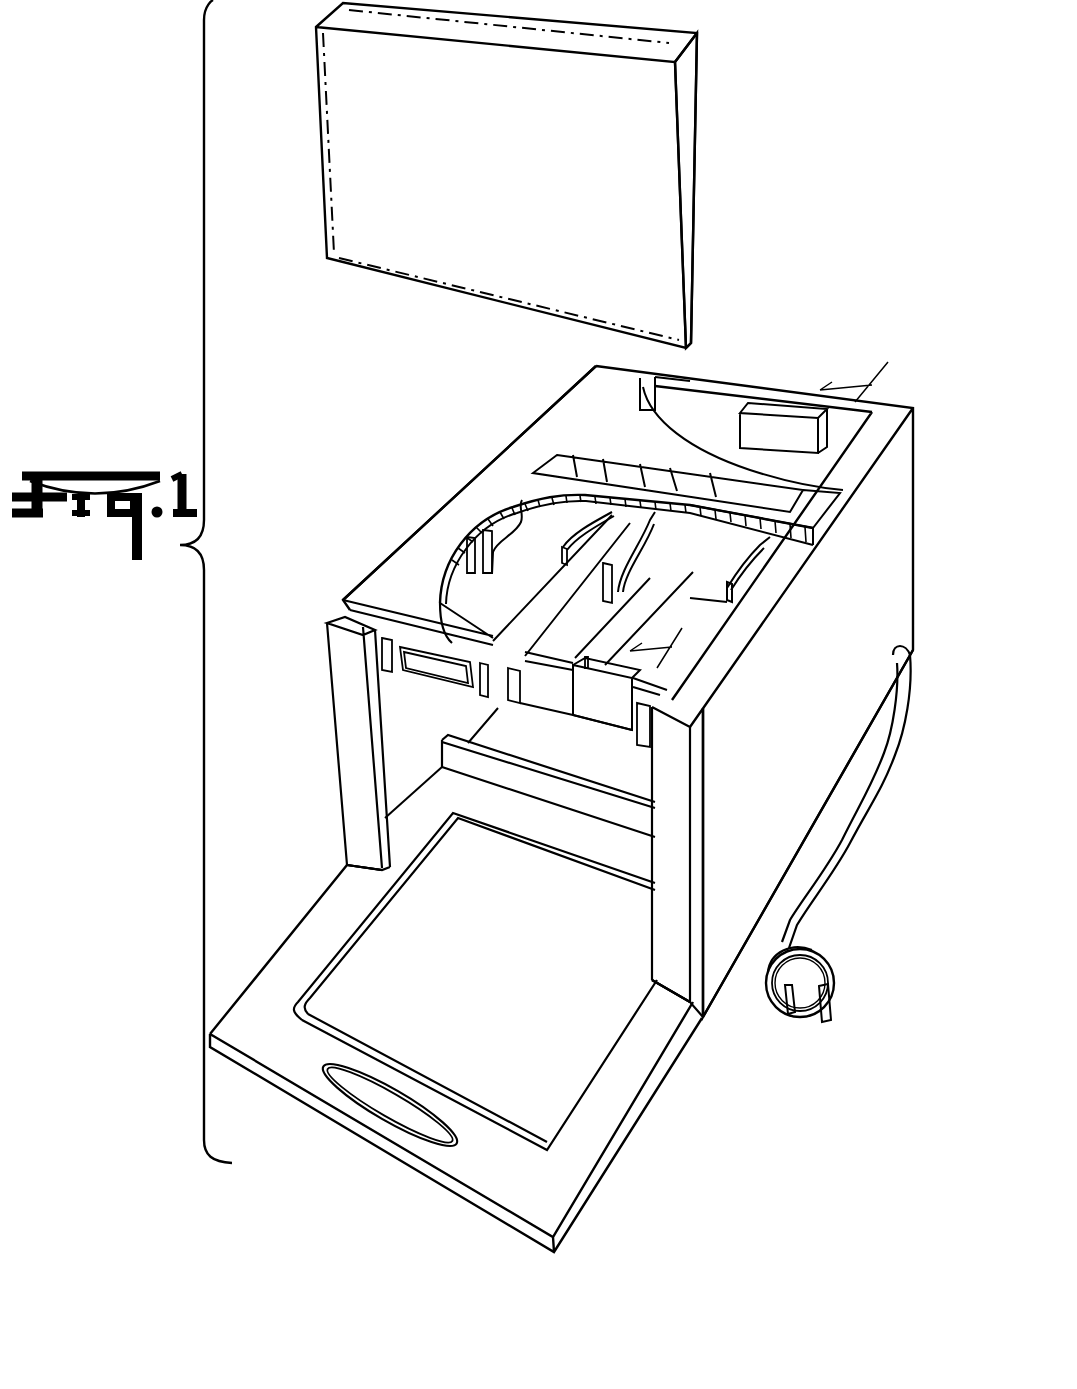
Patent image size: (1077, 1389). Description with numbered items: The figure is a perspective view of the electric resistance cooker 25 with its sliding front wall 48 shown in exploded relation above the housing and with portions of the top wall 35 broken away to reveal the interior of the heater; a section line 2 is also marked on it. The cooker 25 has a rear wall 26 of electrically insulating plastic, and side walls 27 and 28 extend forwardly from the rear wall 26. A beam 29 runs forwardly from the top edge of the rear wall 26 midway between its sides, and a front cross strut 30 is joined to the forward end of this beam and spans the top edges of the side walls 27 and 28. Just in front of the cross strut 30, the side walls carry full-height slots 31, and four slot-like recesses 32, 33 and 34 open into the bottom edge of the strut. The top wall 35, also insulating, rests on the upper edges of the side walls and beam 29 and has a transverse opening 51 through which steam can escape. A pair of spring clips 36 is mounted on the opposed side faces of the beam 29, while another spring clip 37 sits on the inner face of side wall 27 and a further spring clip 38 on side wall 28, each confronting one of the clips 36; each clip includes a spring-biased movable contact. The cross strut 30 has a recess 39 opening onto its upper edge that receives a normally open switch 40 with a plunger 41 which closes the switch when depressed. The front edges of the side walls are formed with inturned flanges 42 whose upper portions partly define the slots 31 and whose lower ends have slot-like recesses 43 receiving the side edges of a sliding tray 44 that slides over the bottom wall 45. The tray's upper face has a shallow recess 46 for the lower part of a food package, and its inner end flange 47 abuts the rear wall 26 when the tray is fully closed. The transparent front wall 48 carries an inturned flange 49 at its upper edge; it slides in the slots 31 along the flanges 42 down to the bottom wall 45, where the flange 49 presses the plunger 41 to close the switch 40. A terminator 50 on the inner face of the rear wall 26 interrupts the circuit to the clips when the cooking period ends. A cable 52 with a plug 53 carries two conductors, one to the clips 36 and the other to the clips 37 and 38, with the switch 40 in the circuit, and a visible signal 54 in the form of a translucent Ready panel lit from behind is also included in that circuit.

The section line 2- 2 is at (751, 515).
The cooker 25 is at (428, 466).
The rear wall 26 is at (668, 392).
The side wall 27 is at (718, 967).
The side wall 28 is at (420, 772).
The beam 29 is at (722, 413).
The front cross strut 30 is at (553, 705).
The slots 31 is at (345, 617).
The slot-like recess 32 is at (645, 748).
The slot-like recess 33 is at (505, 672).
The slot-like recess 34 is at (390, 672).
The top wall 35 is at (596, 398).
The spring clips 36 is at (590, 523).
The spring clip 37 is at (740, 572).
The spring clip 38 is at (498, 538).
The recess 39 is at (572, 690).
The switch 40 is at (595, 720).
The plunger 41 is at (590, 657).
The inturned flanges 42 is at (348, 737).
The slot-like recesses 43 is at (375, 865).
The sliding tray 44 is at (630, 1180).
The bottom wall 45 is at (655, 626).
The shallow recess 46 is at (511, 1003).
The inner end flange 47 is at (586, 803).
The sliding front wall 48 is at (654, 220).
The inturned flange 49 is at (700, 35).
The terminator 50 is at (800, 410).
The transverse opening 51 is at (732, 490).
The cable 52 is at (822, 845).
The plug 53 is at (836, 973).
The visible signal 54 is at (437, 672).